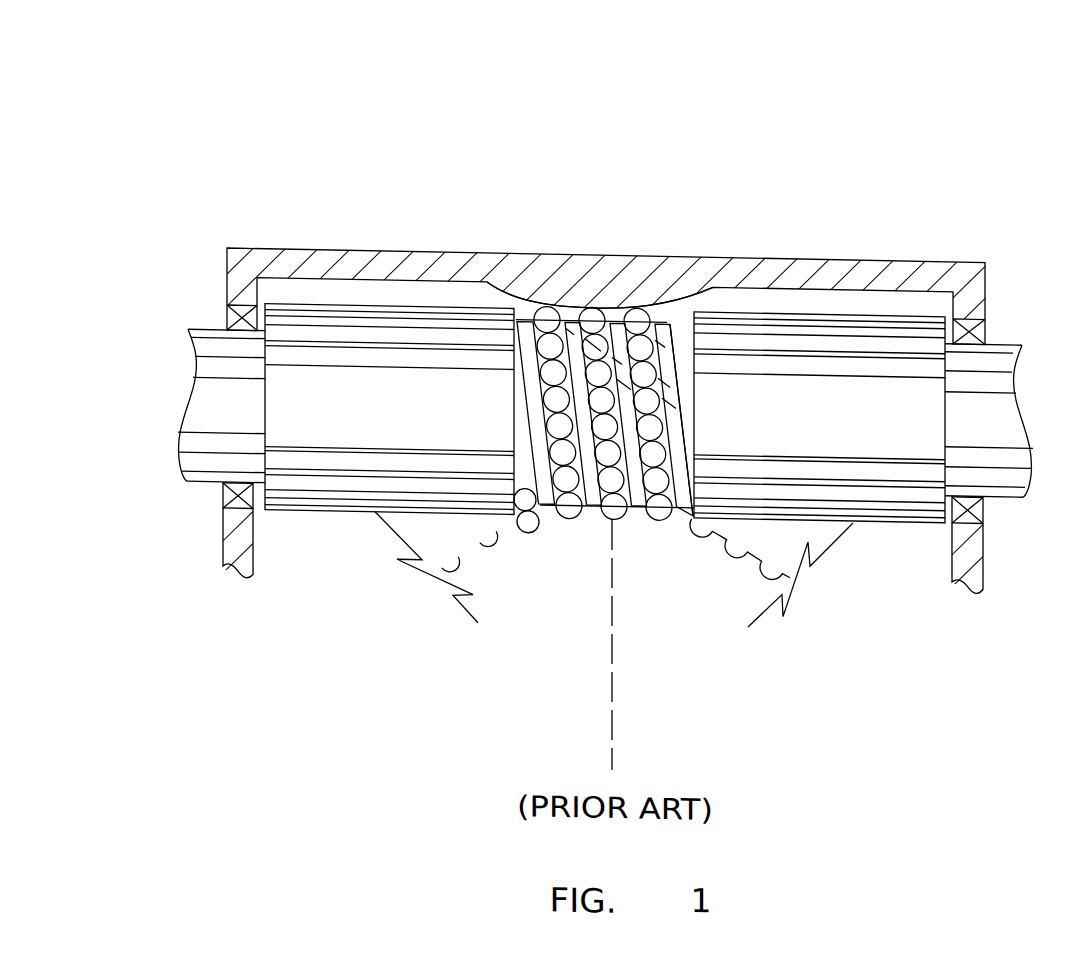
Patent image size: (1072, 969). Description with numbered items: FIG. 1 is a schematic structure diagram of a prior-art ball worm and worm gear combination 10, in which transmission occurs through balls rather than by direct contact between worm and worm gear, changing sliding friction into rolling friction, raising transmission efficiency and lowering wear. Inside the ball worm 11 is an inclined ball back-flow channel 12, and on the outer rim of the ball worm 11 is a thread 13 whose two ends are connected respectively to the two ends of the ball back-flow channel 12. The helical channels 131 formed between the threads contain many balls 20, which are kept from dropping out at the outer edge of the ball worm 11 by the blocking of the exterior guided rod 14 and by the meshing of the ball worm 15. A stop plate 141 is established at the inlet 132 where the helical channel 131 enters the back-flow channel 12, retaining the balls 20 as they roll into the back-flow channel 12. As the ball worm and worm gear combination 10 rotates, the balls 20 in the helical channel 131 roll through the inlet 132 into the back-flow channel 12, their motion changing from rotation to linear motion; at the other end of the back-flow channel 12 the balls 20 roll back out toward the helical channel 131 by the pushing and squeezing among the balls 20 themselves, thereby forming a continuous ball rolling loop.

The ball worm and worm gear combination 10 is at (440, 656).
The ball worm 11 is at (818, 354).
The ball back-flow channel 12 is at (789, 537).
The thread 13 is at (662, 322).
The exterior guided rod 14 is at (595, 270).
The stop plate 141 is at (550, 306).
The helical channel 131 is at (555, 488).
The inlet 132 is at (509, 293).
The ball worm 15 is at (741, 666).
The balls 20 is at (633, 310).